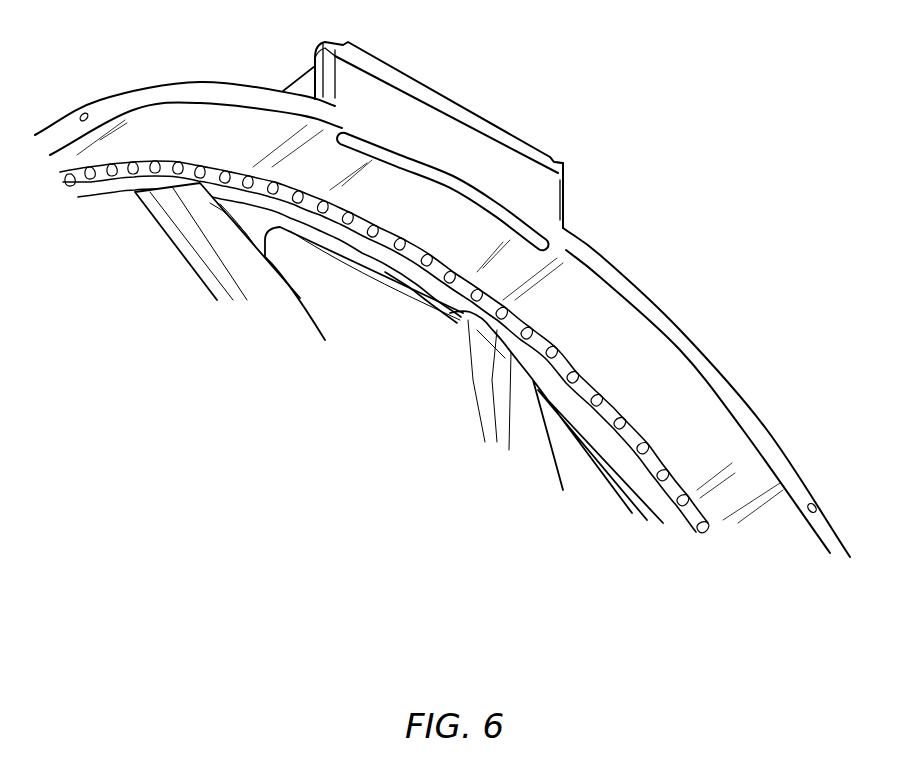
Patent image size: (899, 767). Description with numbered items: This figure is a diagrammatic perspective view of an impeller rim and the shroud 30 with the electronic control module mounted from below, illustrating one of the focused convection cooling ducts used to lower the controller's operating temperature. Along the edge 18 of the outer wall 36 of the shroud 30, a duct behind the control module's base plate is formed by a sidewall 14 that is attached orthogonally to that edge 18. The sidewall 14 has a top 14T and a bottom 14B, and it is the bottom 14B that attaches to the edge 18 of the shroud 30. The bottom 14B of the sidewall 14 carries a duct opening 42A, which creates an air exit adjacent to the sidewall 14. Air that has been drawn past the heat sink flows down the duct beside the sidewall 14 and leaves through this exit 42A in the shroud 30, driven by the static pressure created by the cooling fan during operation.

The edge 18 is at (167, 90).
The sidewall 14 is at (447, 125).
The top of the sidewall 14T is at (316, 52).
The bottom of the sidewall 14B is at (567, 223).
The duct opening 42A is at (483, 213).
The outer wall 36 is at (620, 270).
The shroud 30 is at (720, 293).